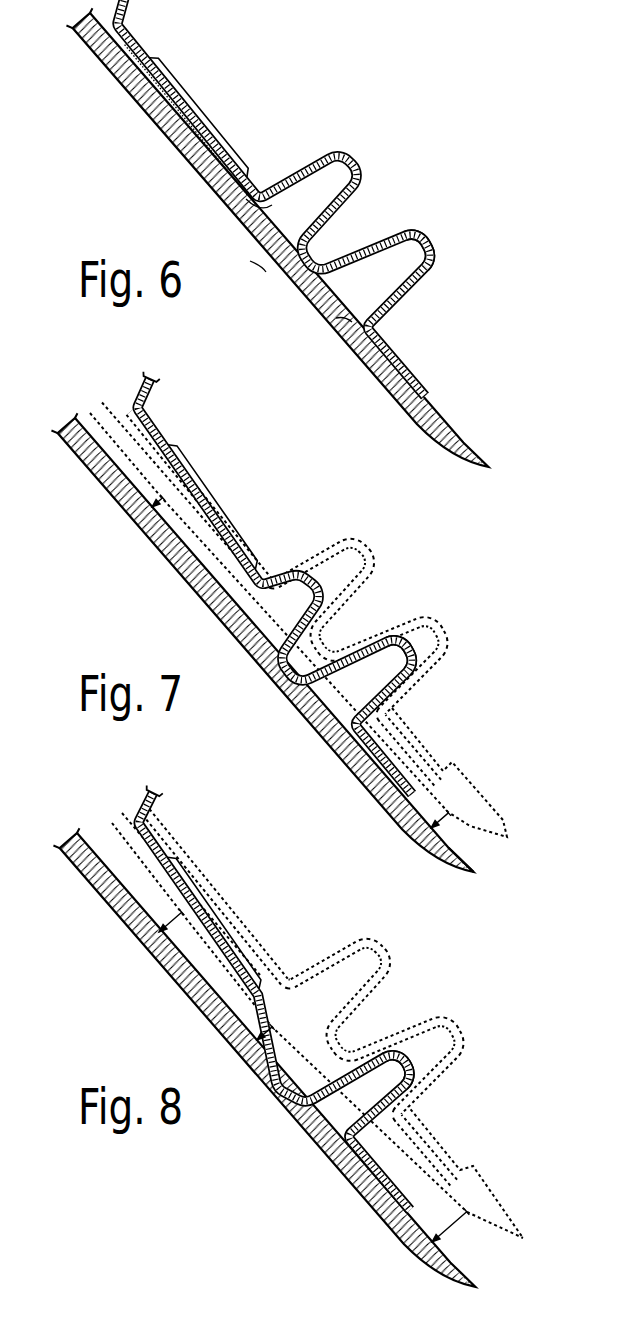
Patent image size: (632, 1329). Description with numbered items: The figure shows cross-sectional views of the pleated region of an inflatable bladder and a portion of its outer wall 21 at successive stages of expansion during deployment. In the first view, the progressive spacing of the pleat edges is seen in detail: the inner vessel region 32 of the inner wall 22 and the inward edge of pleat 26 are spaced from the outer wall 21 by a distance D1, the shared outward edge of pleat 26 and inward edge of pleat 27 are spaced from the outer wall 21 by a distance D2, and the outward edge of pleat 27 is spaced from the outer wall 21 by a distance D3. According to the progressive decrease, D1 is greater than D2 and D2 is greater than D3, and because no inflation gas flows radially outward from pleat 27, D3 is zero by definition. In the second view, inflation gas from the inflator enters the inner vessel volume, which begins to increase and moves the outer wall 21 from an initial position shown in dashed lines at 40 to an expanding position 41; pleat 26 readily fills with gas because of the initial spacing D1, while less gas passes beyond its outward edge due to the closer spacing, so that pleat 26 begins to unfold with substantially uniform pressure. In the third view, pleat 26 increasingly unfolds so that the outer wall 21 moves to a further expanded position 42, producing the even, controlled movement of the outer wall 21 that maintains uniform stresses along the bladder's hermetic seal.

In FIG. 6, the outer wall 21 is at (167, 140).
In FIG. 7, the outer wall 21 is at (150, 538).
In FIG. 6, the inner wall 22 is at (203, 115).
In FIG. 7, the inner wall 22 is at (200, 486).
In FIG. 6, the pleat 26 is at (332, 154).
In FIG. 7, the pleat 26 is at (297, 574).
In FIG. 8, the pleat 26 is at (277, 1027).
In FIG. 6, the pleat 27 is at (407, 231).
In FIG. 7, the pleat 27 is at (412, 649).
In FIG. 8, the pleat 27 is at (410, 1062).
In FIG. 6, the inner vessel region 32 is at (158, 90).
In FIG. 7, the initial position 40 is at (470, 798).
In FIG. 8, the initial position 40 is at (433, 1123).
In FIG. 7, the expanding position 41 is at (478, 867).
In FIG. 8, the further expanded position 42 is at (478, 1283).
In FIG. 6, the distance D1 is at (282, 200).
In FIG. 6, the distance D2 is at (292, 260).
In FIG. 6, the distance D3 is at (343, 321).